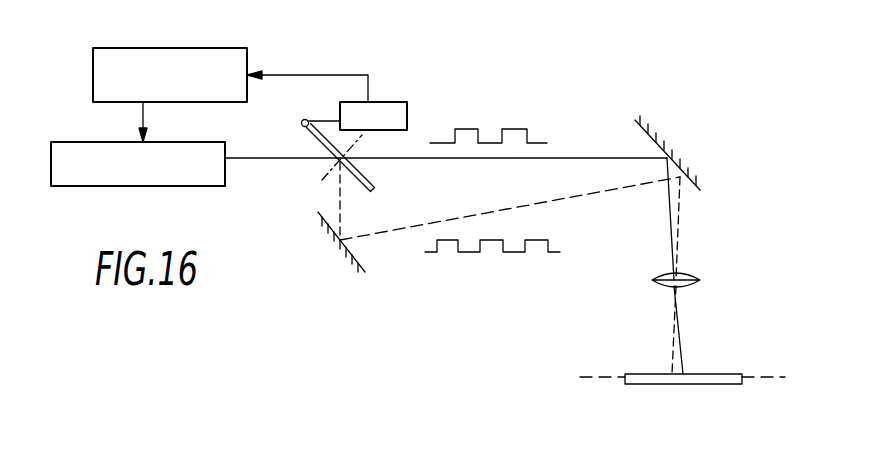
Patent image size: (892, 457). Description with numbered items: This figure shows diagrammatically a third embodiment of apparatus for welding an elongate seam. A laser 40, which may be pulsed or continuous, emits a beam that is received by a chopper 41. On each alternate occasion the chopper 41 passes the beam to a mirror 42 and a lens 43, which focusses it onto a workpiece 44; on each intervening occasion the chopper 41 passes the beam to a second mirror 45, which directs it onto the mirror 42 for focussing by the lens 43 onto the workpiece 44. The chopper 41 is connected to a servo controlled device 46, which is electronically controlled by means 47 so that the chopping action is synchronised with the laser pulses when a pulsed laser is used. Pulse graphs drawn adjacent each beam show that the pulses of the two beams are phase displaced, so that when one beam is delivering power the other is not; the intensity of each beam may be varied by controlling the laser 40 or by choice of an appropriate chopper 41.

The laser 40 is at (72, 142).
The chopper 41 is at (374, 186).
The mirror 42 is at (706, 198).
The lens 43 is at (711, 320).
The workpiece 44 is at (641, 374).
The second mirror 45 is at (465, 233).
The servo controlled device 46 is at (407, 103).
The electronic control means 47 is at (247, 52).